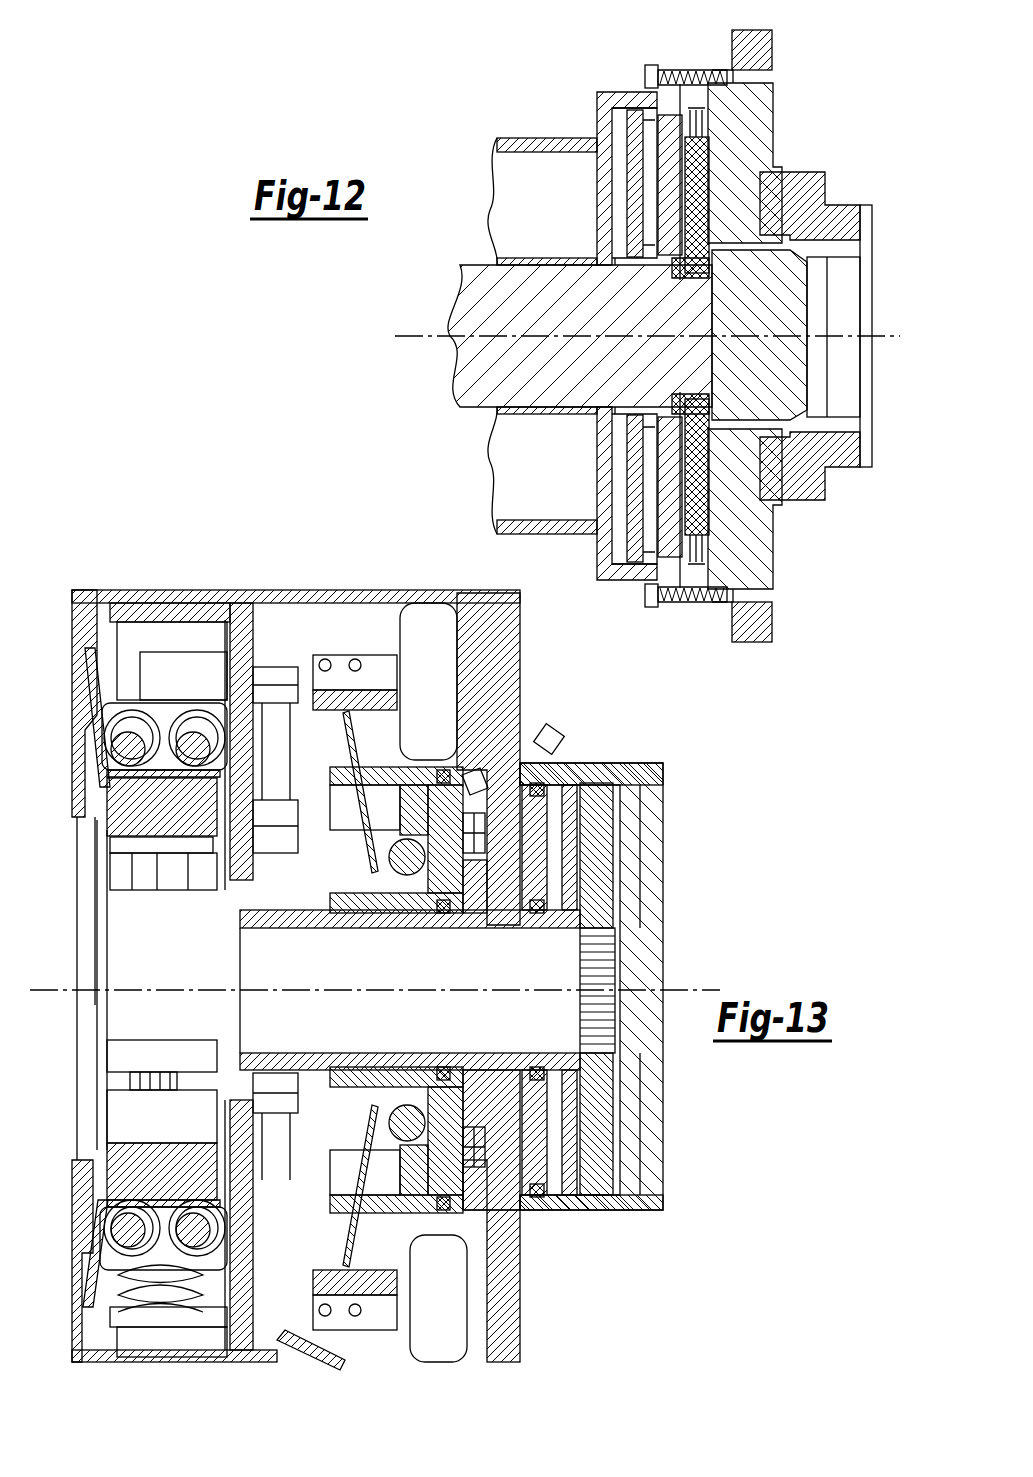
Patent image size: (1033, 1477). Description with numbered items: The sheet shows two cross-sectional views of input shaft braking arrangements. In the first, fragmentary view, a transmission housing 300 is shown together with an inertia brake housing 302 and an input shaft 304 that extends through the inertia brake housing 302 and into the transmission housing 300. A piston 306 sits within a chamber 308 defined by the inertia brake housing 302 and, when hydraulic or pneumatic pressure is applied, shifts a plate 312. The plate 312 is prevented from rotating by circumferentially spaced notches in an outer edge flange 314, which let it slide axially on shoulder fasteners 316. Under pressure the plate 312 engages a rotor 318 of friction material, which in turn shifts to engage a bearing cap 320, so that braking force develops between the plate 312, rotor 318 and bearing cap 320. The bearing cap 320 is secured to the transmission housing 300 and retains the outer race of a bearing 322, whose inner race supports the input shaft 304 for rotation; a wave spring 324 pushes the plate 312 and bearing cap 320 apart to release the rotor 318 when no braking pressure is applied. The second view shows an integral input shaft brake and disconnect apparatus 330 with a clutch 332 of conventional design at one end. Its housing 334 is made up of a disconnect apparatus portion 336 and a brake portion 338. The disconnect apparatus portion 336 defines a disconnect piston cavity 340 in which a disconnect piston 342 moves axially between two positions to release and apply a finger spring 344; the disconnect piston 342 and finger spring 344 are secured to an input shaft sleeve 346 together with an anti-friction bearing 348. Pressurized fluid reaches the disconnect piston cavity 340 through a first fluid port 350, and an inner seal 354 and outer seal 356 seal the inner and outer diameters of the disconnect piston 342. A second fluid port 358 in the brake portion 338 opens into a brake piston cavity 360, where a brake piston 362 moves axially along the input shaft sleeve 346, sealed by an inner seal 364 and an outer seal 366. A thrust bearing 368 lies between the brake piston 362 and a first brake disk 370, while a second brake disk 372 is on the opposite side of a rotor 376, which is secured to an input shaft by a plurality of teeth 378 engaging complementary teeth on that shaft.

In FIG. 12, the transmission housing 300 is at (757, 53).
In FIG. 12, the inertia brake housing 302 is at (553, 137).
In FIG. 12, the input shaft 304 is at (515, 365).
In FIG. 12, the piston 306 is at (630, 530).
In FIG. 12, the chamber 308 is at (620, 465).
In FIG. 12, the plate 312 is at (670, 195).
In FIG. 12, the outer edge flange 314 is at (681, 605).
In FIG. 12, the shoulder fasteners 316 is at (650, 65).
In FIG. 12, the rotor 318 is at (700, 165).
In FIG. 12, the bearing cap 320 is at (760, 545).
In FIG. 12, the bearing 322 is at (800, 490).
In FIG. 12, the wave spring 324 is at (705, 120).
In FIG. 13, the integral input shaft brake and disconnect apparatus 330 is at (222, 565).
In FIG. 13, the clutch 332 is at (93, 851).
In FIG. 13, the housing 334 is at (525, 1308).
In FIG. 13, the disconnect apparatus portion 336 is at (472, 1098).
In FIG. 13, the brake portion 338 is at (606, 1215).
In FIG. 13, the disconnect piston cavity 340 is at (505, 785).
In FIG. 13, the disconnect piston 342 is at (445, 1172).
In FIG. 13, the finger spring 344 is at (355, 1232).
In FIG. 13, the input shaft sleeve 346 is at (385, 928).
In FIG. 13, the anti-friction bearing 348 is at (407, 1110).
In FIG. 13, the first fluid port 350 is at (470, 775).
In FIG. 13, the inner seal 354 is at (450, 915).
In FIG. 13, the outer seal 356 is at (440, 800).
In FIG. 13, the second fluid port 358 is at (535, 770).
In FIG. 13, the brake piston cavity 360 is at (520, 843).
In FIG. 13, the brake piston 362 is at (600, 800).
In FIG. 13, the inner seal 364 is at (535, 908).
In FIG. 13, the outer seal 366 is at (565, 808).
In FIG. 13, the thrust bearing 368 is at (640, 800).
In FIG. 13, the first brake disk 370 is at (570, 1125).
In FIG. 13, the second brake disk 372 is at (640, 885).
In FIG. 13, the rotor 376 is at (625, 852).
In FIG. 13, the teeth 378 is at (600, 1040).